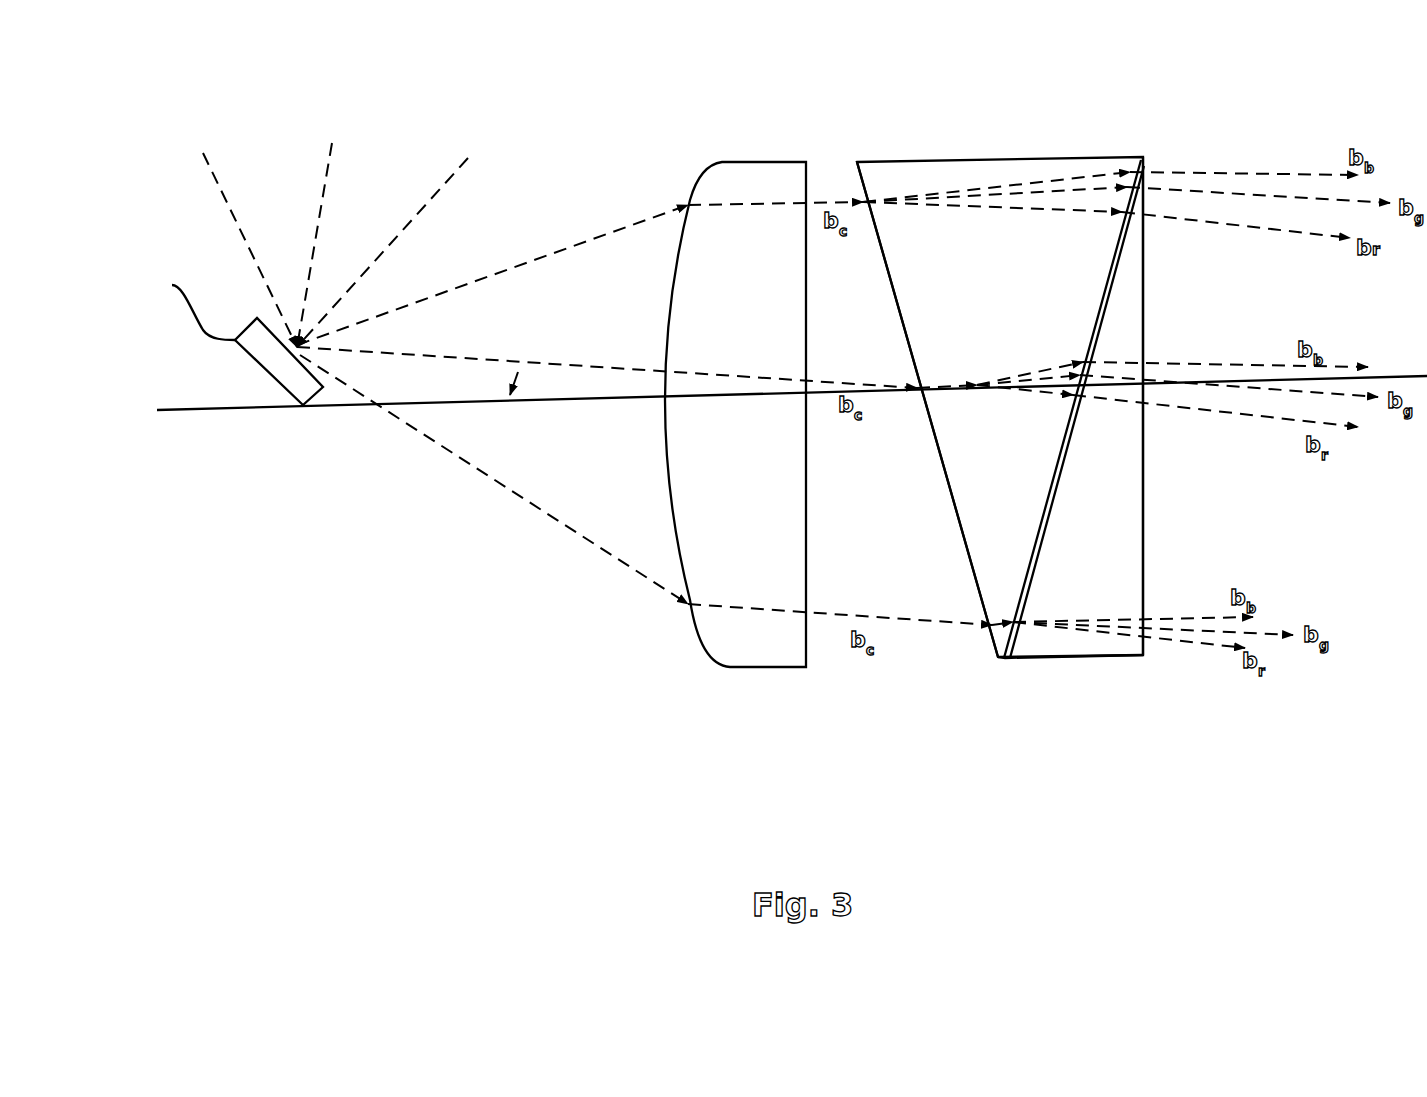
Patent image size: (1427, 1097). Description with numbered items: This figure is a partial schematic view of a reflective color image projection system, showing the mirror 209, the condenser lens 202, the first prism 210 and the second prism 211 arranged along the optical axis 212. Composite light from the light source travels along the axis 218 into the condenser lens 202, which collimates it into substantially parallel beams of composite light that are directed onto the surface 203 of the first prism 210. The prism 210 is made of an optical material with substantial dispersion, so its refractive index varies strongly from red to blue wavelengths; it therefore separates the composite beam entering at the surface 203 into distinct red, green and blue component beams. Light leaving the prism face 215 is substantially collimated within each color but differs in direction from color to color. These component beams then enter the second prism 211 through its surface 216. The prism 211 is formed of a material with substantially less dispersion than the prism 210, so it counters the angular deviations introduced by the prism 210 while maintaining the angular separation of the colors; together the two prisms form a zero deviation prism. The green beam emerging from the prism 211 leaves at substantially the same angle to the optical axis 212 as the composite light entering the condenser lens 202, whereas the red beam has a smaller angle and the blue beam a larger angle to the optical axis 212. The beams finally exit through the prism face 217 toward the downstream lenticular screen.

The condenser lens 202 is at (747, 667).
The surface of prism 203 is at (943, 463).
The mirror 209 is at (218, 341).
The first prism 210 is at (968, 157).
The second prism 211 is at (1085, 657).
The optical axis 212 is at (227, 412).
The prism face 215 is at (1060, 440).
The surface of prism 216 is at (1045, 528).
The prism face 217 is at (1147, 472).
The axis 218 is at (328, 198).